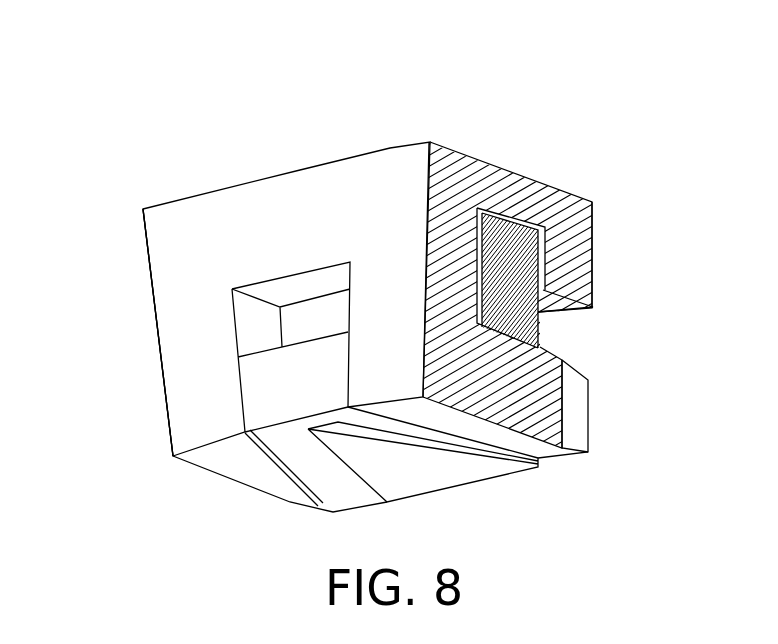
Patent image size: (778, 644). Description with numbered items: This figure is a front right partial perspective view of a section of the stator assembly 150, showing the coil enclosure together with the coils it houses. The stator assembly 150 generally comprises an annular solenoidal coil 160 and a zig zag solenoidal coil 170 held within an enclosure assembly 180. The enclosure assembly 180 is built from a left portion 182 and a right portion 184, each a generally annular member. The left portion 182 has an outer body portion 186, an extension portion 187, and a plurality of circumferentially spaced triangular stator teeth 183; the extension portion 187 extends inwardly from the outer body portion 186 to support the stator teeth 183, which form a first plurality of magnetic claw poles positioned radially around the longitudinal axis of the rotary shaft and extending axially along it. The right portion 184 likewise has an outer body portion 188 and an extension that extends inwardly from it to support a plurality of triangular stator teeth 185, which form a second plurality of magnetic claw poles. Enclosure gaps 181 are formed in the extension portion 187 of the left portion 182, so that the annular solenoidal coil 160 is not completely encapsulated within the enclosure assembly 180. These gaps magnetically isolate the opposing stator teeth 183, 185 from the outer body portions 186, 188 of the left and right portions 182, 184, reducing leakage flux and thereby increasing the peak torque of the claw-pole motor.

The stator assembly 150 is at (431, 98).
The outer body portion 186 is at (281, 196).
The left portion 182 is at (160, 418).
The extension portion 187 is at (172, 357).
The enclosure gaps 181 is at (244, 341).
The enclosure assembly 180 is at (572, 174).
The outer body portion 188 is at (584, 208).
The right portion 184 is at (602, 287).
The annular solenoidal coil 160 is at (523, 264).
The stator teeth 183 is at (238, 468).
The zig zag solenoidal coil 170 is at (313, 480).
The stator teeth 185 is at (414, 485).